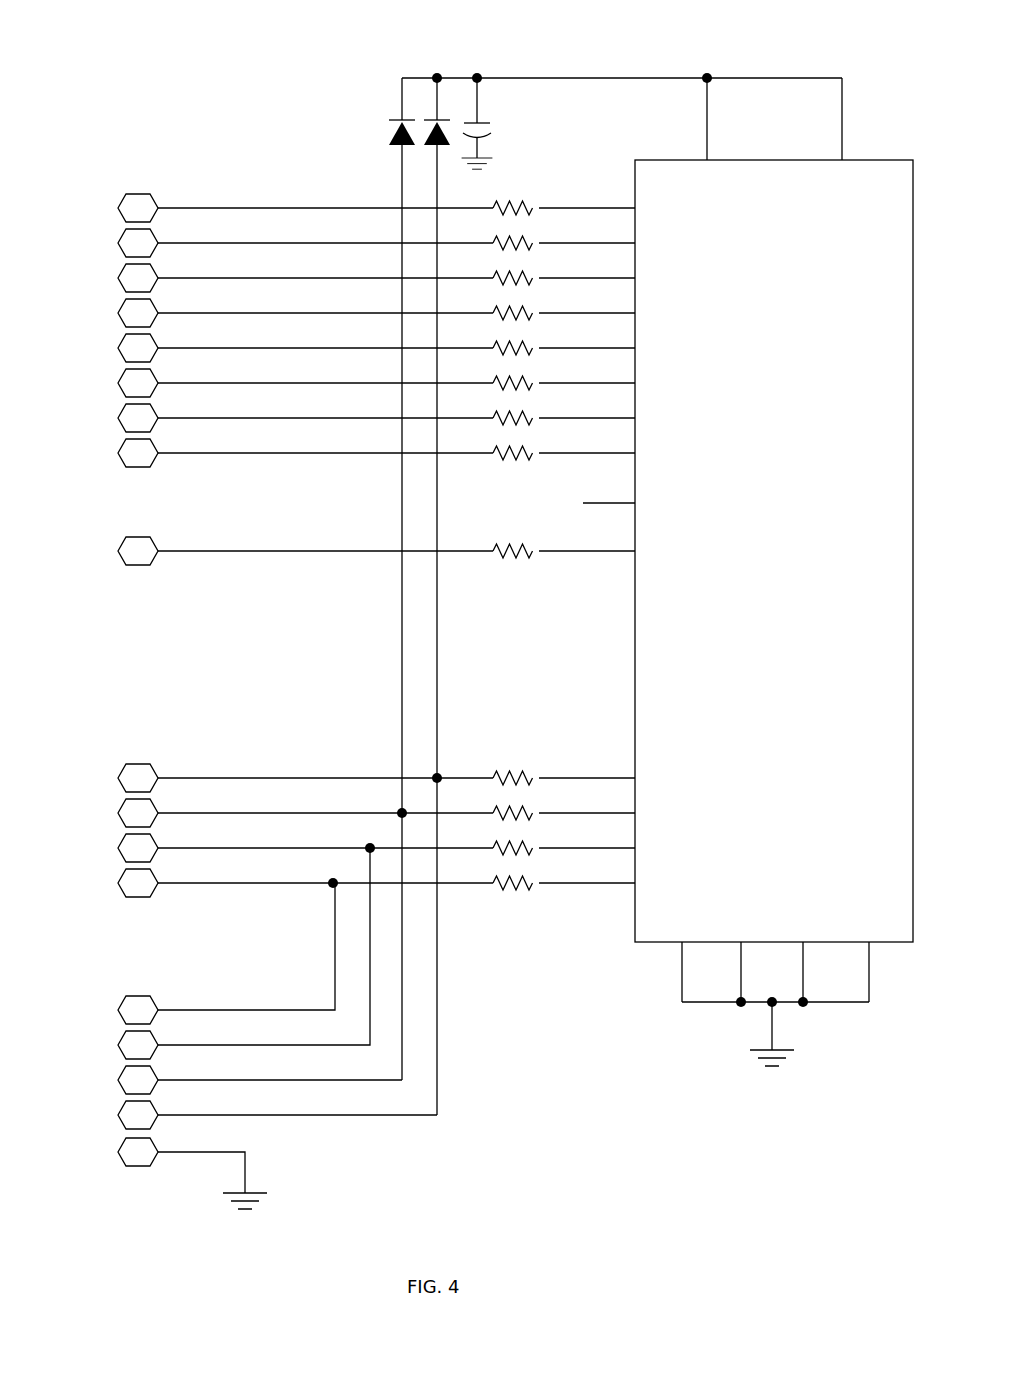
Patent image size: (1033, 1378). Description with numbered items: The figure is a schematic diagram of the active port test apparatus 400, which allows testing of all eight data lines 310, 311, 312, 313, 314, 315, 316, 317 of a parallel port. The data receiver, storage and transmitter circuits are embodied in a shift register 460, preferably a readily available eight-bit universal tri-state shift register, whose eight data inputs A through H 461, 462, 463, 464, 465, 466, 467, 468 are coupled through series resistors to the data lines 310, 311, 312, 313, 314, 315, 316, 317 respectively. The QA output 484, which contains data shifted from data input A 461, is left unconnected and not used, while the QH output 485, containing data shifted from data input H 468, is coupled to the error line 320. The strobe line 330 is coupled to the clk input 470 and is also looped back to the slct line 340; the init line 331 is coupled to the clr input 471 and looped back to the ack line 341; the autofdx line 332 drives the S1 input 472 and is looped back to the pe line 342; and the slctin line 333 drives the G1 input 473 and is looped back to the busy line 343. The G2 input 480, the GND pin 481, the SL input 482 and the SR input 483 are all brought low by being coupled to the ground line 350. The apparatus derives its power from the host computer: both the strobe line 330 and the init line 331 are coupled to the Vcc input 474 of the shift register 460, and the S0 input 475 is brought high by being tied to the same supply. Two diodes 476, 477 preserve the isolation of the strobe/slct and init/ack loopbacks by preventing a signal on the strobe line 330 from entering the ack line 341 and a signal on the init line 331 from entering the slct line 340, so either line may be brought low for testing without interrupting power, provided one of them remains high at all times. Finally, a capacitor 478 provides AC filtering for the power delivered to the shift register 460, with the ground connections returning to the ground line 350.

The test apparatus 400 is at (203, 95).
The data line 310 is at (232, 208).
The data line 311 is at (232, 243).
The data line 312 is at (232, 278).
The data line 313 is at (232, 313).
The data line 314 is at (232, 348).
The data line 315 is at (232, 383).
The data line 316 is at (232, 418).
The data line 317 is at (232, 453).
The error line 320 is at (232, 551).
The strobe line 330 is at (225, 778).
The init line 331 is at (225, 813).
The autofdx line 332 is at (225, 848).
The slctin line 333 is at (225, 883).
The slct line 340 is at (225, 1115).
The ack line 341 is at (225, 1080).
The pe line 342 is at (225, 1045).
The busy line 343 is at (225, 1010).
The ground line 350 is at (247, 1170).
The shift register 460 is at (819, 526).
The data input A 461 is at (637, 207).
The data input B 462 is at (637, 242).
The data input C 463 is at (637, 277).
The data input D 464 is at (637, 312).
The data input E 465 is at (637, 347).
The data input F 466 is at (637, 382).
The data input G 467 is at (637, 417).
The data input H 468 is at (637, 452).
The clk input 470 is at (637, 777).
The clr input 471 is at (637, 812).
The S1 input 472 is at (637, 847).
The G1 input 473 is at (637, 882).
The Vcc input 474 is at (707, 160).
The S0 input 475 is at (842, 160).
The diode 476 is at (398, 78).
The diode 477 is at (433, 92).
The capacitor 478 is at (479, 120).
The G2 input 480 is at (682, 942).
The GND pin 481 is at (741, 942).
The SL input 482 is at (803, 942).
The SR input 483 is at (869, 942).
The QA output 484 is at (637, 502).
The QH output 485 is at (637, 550).